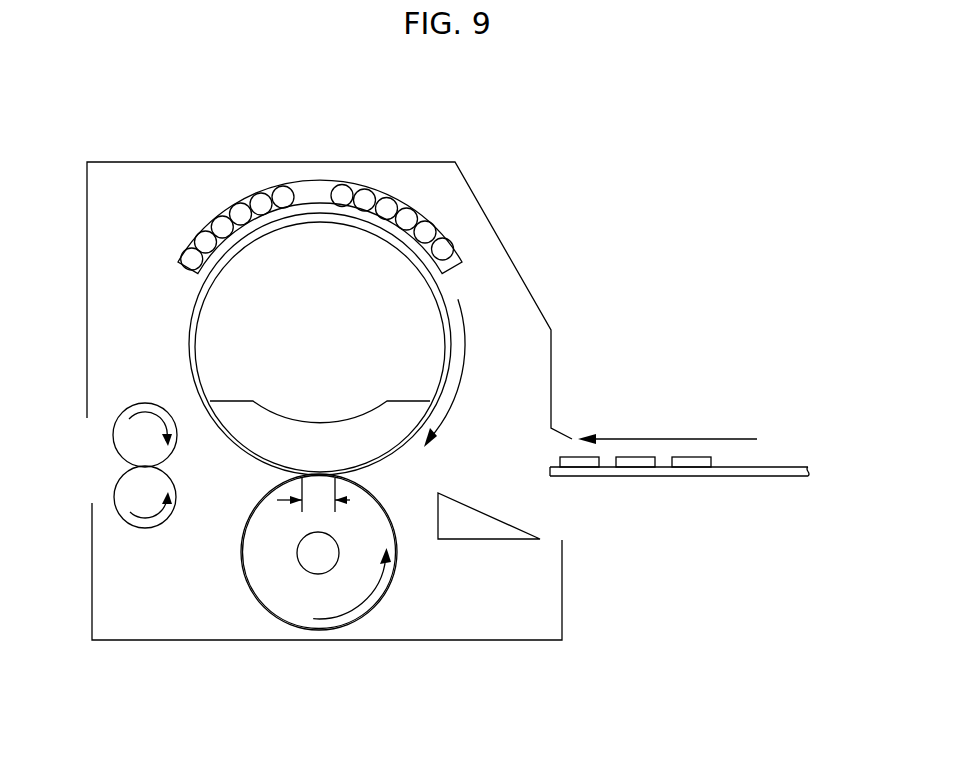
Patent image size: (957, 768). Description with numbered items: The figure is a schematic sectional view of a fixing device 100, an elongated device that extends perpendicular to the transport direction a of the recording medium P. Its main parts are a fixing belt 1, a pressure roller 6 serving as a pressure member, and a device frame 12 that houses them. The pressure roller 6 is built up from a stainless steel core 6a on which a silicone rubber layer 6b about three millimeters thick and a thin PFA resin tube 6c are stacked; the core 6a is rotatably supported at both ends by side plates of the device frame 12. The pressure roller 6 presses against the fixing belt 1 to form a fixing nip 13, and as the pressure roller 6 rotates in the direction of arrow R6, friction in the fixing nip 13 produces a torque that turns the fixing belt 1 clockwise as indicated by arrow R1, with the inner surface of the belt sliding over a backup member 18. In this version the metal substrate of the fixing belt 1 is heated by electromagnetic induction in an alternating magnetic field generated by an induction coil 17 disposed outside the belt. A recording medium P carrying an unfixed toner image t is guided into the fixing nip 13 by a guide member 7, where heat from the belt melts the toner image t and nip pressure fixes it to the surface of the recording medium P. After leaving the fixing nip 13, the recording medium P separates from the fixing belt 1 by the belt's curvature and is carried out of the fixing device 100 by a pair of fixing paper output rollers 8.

The fixing device 100 is at (130, 156).
The device frame 12 is at (518, 641).
The induction coil 17 is at (394, 196).
The fixing belt 1 is at (449, 330).
The backup member 18 is at (330, 440).
The pressure roller 6 is at (311, 552).
The core 6a is at (314, 565).
The silicone rubber layer 6b is at (250, 559).
The PFA resin tube 6c is at (258, 601).
The fixing nip 13 is at (298, 505).
The fixing paper output rollers 8 is at (142, 514).
The guide member 7 is at (463, 531).
The recording medium P is at (620, 478).
The unfixed toner image t is at (700, 457).
The transport direction a is at (667, 428).
The arrow R1 is at (451, 373).
The arrow R6 is at (352, 575).